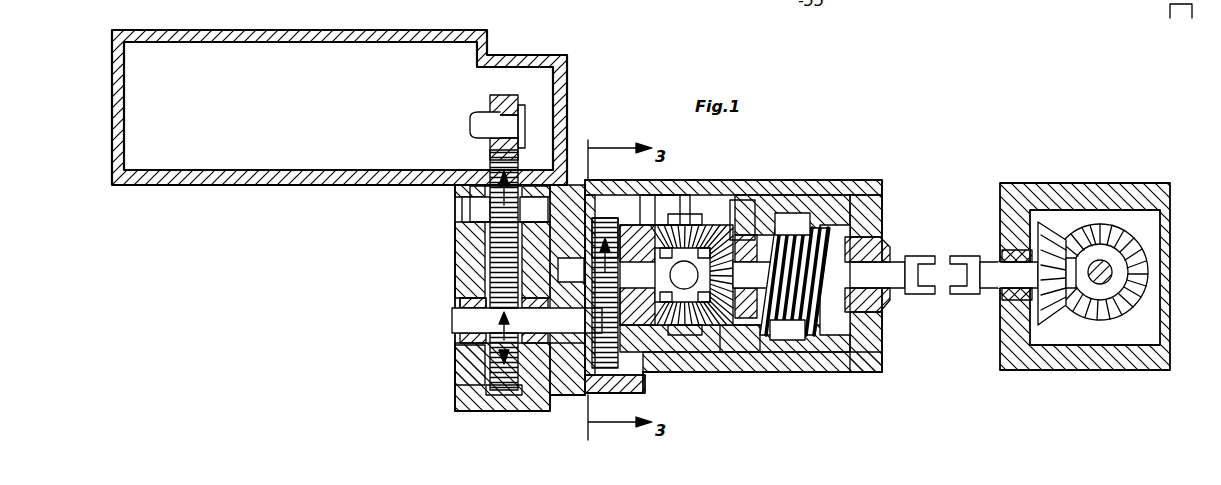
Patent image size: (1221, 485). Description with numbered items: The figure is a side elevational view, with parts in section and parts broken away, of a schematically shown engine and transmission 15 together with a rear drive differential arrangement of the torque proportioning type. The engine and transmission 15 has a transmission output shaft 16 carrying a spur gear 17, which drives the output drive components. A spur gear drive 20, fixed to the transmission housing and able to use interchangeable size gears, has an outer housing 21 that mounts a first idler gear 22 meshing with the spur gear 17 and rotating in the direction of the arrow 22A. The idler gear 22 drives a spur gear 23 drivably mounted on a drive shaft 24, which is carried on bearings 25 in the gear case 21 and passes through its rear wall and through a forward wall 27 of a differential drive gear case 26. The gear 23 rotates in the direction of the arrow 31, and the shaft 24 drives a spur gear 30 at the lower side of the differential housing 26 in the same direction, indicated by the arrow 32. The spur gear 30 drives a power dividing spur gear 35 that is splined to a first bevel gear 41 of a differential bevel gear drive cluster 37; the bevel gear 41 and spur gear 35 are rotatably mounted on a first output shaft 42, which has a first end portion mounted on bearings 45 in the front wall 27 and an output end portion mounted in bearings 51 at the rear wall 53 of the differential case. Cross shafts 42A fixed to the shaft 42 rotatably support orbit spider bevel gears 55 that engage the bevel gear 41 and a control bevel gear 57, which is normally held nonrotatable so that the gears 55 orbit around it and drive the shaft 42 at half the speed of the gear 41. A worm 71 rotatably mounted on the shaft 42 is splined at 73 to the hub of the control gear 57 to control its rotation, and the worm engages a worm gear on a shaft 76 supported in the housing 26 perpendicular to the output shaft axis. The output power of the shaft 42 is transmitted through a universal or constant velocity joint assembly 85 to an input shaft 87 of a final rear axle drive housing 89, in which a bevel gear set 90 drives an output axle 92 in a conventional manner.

The engine and transmission 15 is at (355, 52).
The transmission output shaft 16 is at (486, 118).
The spur gear 17 is at (508, 98).
The spur gear drive 20 is at (452, 258).
The outer housing 21 is at (468, 372).
The first idler gear 22 is at (492, 195).
The arrow 22A is at (510, 190).
The spur gear 23 is at (500, 385).
The drive shaft 24 is at (460, 318).
The bearings 25 is at (462, 304).
The differential drive gear case 26 is at (674, 190).
The forward wall 27 is at (568, 392).
The spur gear 30 is at (614, 358).
The arrow 31 is at (496, 342).
The arrow 32 is at (602, 375).
The power dividing spur gear 35 is at (600, 216).
The differential bevel gear drive cluster 37 is at (738, 206).
The first bevel gear 41 is at (640, 240).
The first output shaft 42 is at (880, 280).
The cross shafts 42A is at (670, 276).
The bearings 45 is at (571, 270).
The bearings 51 is at (872, 256).
The rear wall 53 is at (872, 206).
The orbit spider bevel gears 55 is at (664, 196).
The control bevel gear 57 is at (732, 320).
The worm 71 is at (845, 240).
The spline 73 is at (791, 222).
The shaft 76 is at (814, 224).
The universal or constant velocity joint assembly 85 is at (942, 288).
The input shaft 87 is at (1008, 268).
The final rear axle drive housing 89 is at (1090, 194).
The bevel gear set 90 is at (1150, 312).
The output axle 92 is at (1104, 262).